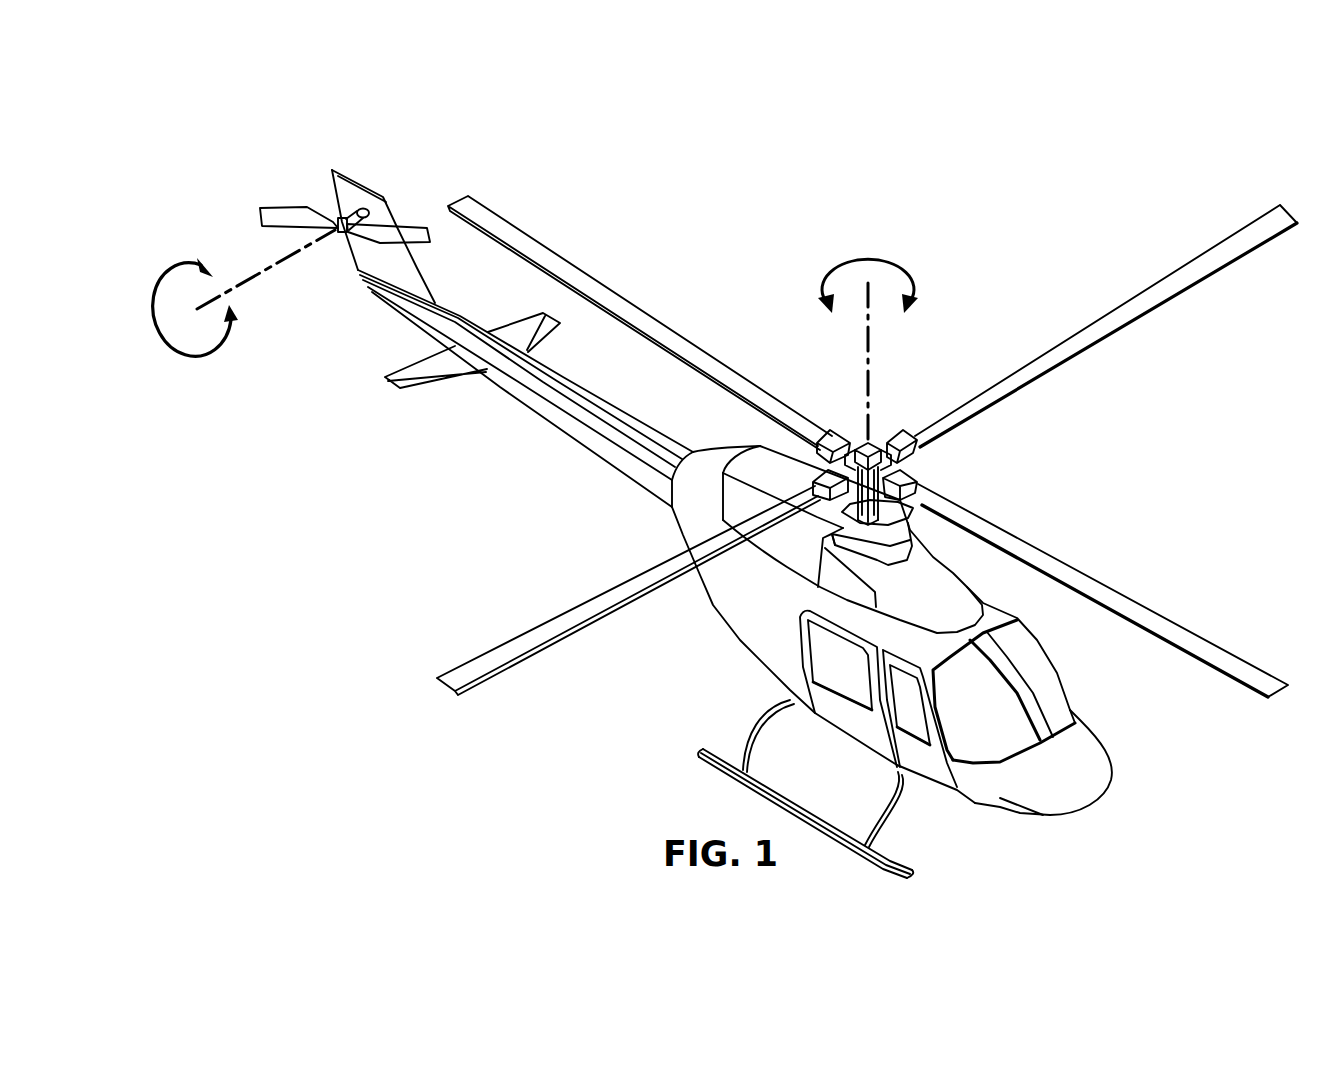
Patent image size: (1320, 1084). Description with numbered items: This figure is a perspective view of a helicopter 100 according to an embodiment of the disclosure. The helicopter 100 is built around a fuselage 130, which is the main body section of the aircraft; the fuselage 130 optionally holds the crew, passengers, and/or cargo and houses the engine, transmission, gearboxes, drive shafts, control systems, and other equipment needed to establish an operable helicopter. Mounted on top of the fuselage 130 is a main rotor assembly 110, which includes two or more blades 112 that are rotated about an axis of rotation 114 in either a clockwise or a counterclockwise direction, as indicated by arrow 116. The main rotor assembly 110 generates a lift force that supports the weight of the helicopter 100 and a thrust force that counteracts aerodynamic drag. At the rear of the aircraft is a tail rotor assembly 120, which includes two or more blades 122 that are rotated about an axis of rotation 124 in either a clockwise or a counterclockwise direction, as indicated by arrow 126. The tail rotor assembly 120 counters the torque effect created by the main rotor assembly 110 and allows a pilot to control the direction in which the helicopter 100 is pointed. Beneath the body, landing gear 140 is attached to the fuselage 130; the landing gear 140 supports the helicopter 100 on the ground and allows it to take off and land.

The helicopter 100 is at (823, 202).
The main rotor assembly 110 is at (828, 393).
The blades 112 is at (608, 284).
The axis of rotation 114 is at (875, 360).
The arrow 116 is at (810, 284).
The tail rotor assembly 120 is at (300, 128).
The blades 122 is at (285, 207).
The axis of rotation 124 is at (267, 273).
The arrow 126 is at (160, 297).
The fuselage 130 is at (1113, 770).
The landing gear 140 is at (897, 860).